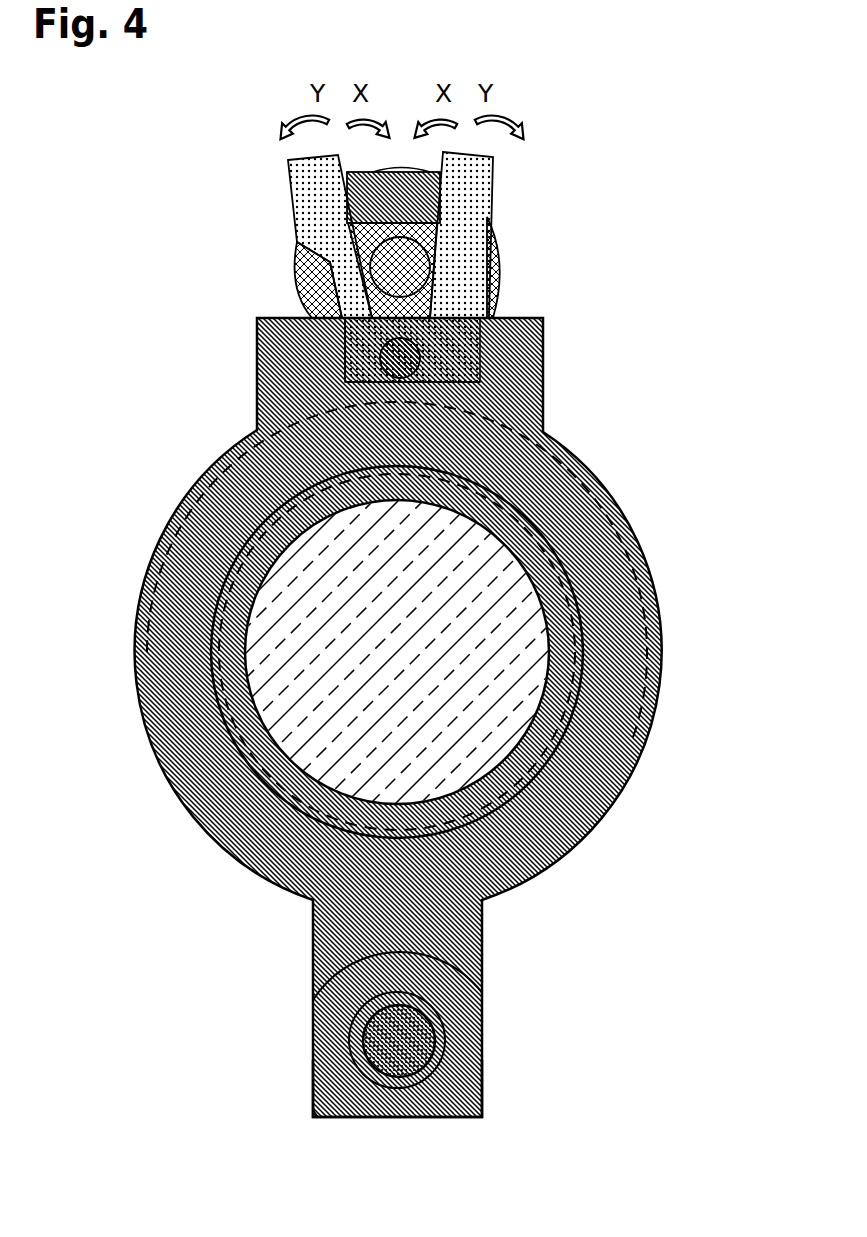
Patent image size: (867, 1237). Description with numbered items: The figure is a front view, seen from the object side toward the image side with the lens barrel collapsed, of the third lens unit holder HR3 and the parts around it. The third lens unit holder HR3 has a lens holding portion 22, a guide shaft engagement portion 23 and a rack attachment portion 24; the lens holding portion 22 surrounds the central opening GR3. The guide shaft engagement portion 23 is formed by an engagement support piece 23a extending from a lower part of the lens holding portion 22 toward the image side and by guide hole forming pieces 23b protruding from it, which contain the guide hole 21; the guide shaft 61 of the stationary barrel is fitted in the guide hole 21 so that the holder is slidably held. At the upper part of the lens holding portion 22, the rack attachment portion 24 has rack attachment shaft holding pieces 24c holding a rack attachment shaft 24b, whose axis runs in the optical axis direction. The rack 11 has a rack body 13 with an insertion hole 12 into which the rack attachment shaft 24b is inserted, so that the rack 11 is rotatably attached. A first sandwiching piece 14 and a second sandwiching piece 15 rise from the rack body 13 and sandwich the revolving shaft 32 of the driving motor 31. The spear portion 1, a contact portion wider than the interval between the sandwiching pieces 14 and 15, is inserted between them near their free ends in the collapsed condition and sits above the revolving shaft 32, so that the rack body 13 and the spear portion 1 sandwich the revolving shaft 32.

The spear portion 1 is at (393, 196).
The rack 11 is at (417, 198).
The insertion hole 12 is at (382, 352).
The rack body 13 is at (345, 340).
The first sandwiching piece 14 is at (293, 197).
The second sandwiching piece 15 is at (487, 195).
The guide hole 21 is at (430, 1068).
The lens holding portion 22 is at (643, 405).
The guide shaft engagement portion 23 is at (482, 1045).
The engagement support piece 23a is at (462, 962).
The guide hole forming piece 23b is at (447, 1040).
The rack attachment portion 24 is at (512, 351).
The rack attachment shaft 24b is at (497, 366).
The rack attachment shaft holding piece 24c is at (497, 336).
The driving motor 31 is at (503, 262).
The revolving shaft 32 is at (400, 267).
The guide shaft 61 is at (399, 1041).
The groove region GR3 is at (426, 652).
The third lens unit holder HR3 is at (672, 150).